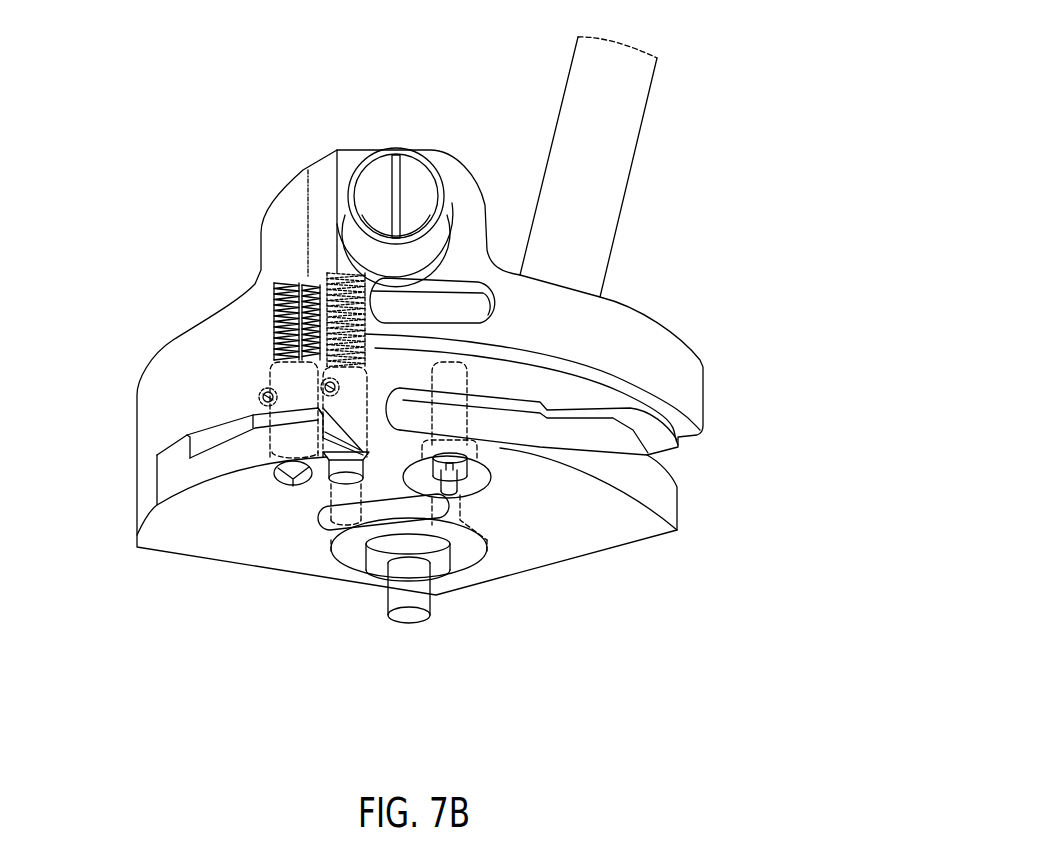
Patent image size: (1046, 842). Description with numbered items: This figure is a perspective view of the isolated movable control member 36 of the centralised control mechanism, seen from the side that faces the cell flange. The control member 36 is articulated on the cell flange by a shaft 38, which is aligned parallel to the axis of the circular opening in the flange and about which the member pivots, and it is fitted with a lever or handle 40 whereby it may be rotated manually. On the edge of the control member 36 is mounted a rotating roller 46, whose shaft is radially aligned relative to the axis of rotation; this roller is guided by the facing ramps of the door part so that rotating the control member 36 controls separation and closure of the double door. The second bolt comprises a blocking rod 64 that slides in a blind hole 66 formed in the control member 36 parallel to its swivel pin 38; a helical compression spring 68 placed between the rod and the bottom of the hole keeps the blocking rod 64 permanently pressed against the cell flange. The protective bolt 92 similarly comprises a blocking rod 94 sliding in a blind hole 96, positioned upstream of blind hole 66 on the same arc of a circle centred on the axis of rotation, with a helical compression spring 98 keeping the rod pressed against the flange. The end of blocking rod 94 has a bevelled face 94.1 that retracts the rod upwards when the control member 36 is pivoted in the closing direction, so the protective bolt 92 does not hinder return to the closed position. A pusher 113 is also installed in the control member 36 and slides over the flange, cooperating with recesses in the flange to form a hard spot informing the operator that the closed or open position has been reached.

The movable control member 36 is at (286, 151).
The rotating roller 46 is at (414, 176).
The handle 40 is at (620, 125).
The helical compression spring 68 is at (312, 272).
The helical compression spring 98 is at (272, 296).
The protective bolt 92 is at (260, 362).
The blocking rod 94 is at (250, 392).
The blind hole 96 is at (284, 477).
The bevelled face 94.1 is at (296, 471).
The blocking rod 64 is at (346, 480).
The shaft 38 is at (418, 598).
The blind hole 66 is at (360, 440).
The pusher 113 is at (474, 483).